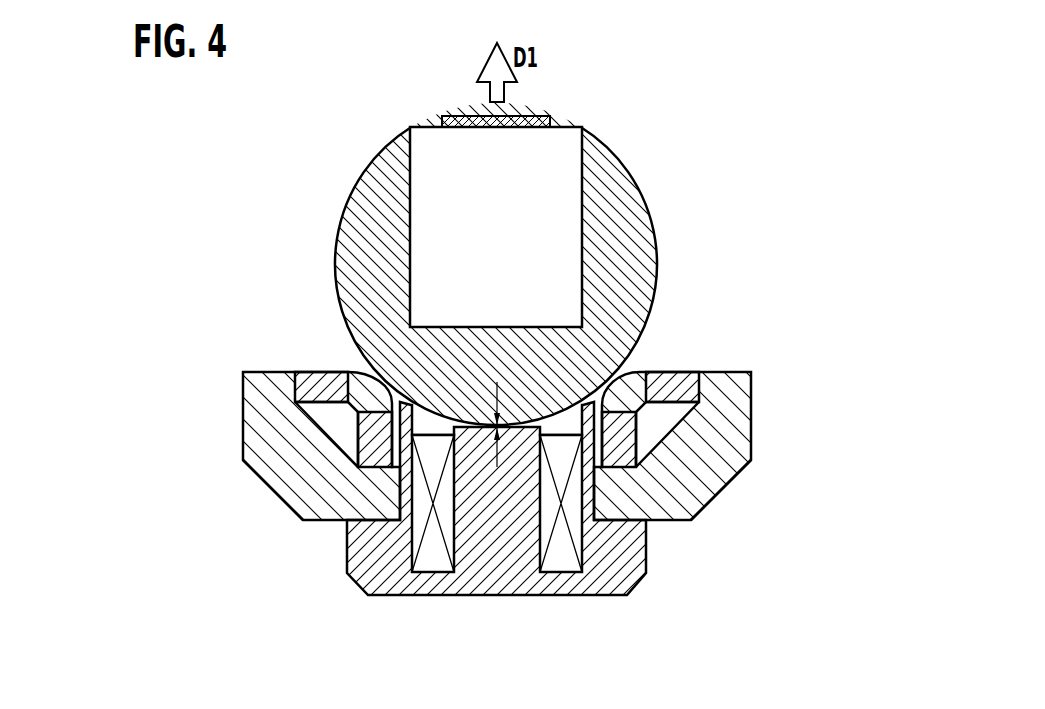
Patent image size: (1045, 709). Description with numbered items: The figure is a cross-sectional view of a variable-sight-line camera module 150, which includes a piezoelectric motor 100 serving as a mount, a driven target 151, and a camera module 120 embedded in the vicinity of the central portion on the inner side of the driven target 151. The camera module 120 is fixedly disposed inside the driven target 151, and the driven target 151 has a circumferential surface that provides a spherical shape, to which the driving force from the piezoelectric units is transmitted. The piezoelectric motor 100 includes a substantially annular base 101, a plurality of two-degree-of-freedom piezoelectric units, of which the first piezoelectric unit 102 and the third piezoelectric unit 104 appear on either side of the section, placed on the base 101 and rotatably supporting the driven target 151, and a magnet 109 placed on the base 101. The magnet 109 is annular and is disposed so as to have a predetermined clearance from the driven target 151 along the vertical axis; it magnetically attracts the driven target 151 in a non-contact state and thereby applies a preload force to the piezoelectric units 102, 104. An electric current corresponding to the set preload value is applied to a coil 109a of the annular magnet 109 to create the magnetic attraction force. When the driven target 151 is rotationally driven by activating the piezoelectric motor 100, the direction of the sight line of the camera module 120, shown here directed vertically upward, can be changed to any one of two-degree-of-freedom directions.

The piezoelectric motor 100 is at (757, 357).
The base 101 is at (270, 493).
The first piezoelectric unit 102 is at (660, 423).
The third piezoelectric unit 104 is at (332, 423).
The magnet 109 is at (513, 595).
The coil 109a is at (433, 550).
The camera module 120 is at (568, 122).
The variable-sight-line camera module 150 is at (667, 140).
The driven target 151 is at (655, 222).